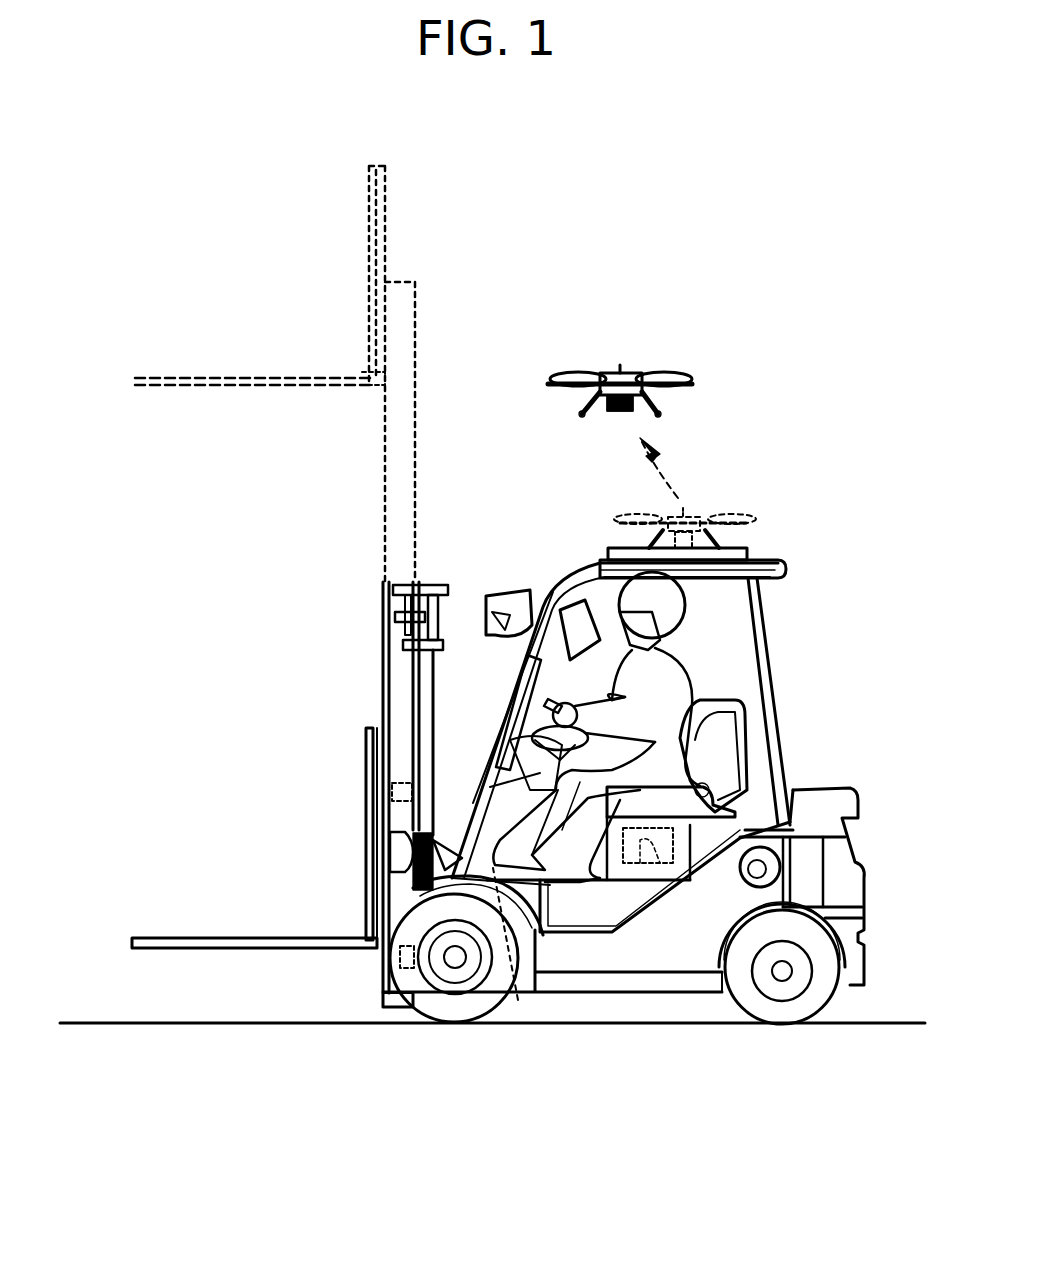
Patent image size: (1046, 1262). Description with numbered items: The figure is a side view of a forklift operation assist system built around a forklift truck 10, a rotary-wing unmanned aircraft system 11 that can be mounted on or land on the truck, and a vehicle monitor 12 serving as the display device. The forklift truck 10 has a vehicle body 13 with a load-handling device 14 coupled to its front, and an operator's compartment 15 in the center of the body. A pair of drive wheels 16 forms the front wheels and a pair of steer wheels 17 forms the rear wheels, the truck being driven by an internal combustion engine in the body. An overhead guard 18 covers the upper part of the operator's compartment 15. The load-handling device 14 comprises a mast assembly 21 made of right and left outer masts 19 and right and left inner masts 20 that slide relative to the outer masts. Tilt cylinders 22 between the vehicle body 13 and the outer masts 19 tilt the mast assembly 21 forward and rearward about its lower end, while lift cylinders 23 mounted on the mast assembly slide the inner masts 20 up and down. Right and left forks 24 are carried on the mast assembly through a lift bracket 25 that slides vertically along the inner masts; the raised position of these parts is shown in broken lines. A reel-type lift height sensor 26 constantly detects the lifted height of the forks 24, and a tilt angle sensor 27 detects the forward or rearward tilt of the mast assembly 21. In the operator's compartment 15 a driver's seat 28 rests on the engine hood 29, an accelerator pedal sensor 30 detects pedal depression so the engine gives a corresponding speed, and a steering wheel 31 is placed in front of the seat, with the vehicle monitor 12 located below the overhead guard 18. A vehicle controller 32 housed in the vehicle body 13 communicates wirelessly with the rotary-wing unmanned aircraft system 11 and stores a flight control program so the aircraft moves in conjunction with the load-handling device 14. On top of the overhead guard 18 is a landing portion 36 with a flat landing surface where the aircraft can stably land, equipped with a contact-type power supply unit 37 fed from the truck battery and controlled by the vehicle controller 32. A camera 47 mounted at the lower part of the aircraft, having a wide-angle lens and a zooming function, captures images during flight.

The forklift truck 10 is at (815, 650).
The rotary-wing unmanned aircraft system 11 is at (648, 365).
The vehicle monitor 12 is at (572, 608).
The vehicle body 13 is at (600, 993).
The load-handling device 14 is at (218, 752).
The operator's compartment 15 is at (735, 648).
The drive wheels 16 is at (415, 1026).
The steer wheels 17 is at (805, 1025).
The overhead guard 18 is at (775, 563).
The outer masts 19 is at (395, 683).
The inner masts 20 is at (385, 492).
The mast assembly 21 is at (382, 650).
The tilt cylinders 22 is at (430, 840).
The lift cylinders 23 is at (432, 690).
The forks 24 is at (188, 948).
The lift bracket 25 is at (365, 757).
The lift height sensor 26 is at (375, 792).
The tilt angle sensor 27 is at (380, 962).
The driver's seat 28 is at (740, 752).
The engine hood 29 is at (730, 812).
The accelerator pedal sensor 30 is at (518, 1000).
The steering wheel 31 is at (542, 705).
The vehicle controller 32 is at (652, 895).
The landing portion 36 is at (610, 548).
The power supply unit 37 is at (705, 558).
The camera 47 is at (600, 412).